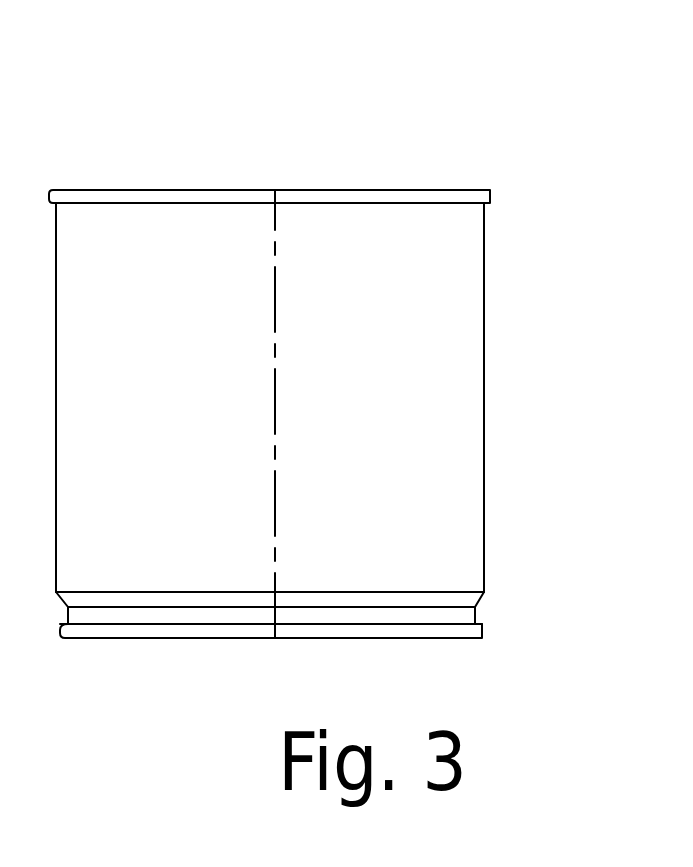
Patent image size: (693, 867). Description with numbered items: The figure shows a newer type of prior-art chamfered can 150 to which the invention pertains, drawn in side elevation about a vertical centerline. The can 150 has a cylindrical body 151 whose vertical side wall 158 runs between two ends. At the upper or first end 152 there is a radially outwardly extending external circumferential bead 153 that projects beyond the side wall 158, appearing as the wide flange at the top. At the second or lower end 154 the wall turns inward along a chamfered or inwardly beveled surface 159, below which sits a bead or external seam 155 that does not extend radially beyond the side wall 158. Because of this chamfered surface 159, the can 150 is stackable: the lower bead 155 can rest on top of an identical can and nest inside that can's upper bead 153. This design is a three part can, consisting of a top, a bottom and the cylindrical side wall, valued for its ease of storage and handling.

The chamfered can 150 is at (415, 160).
The cylindrical body 151 is at (463, 268).
The upper or first end 152 is at (485, 217).
The external circumferential bead 153 is at (490, 191).
The second or lower end 154 is at (485, 575).
The bead or external seam 155 is at (487, 638).
The side wall 158 is at (483, 397).
The chamfered or inwardly beveled surface 159 is at (482, 602).